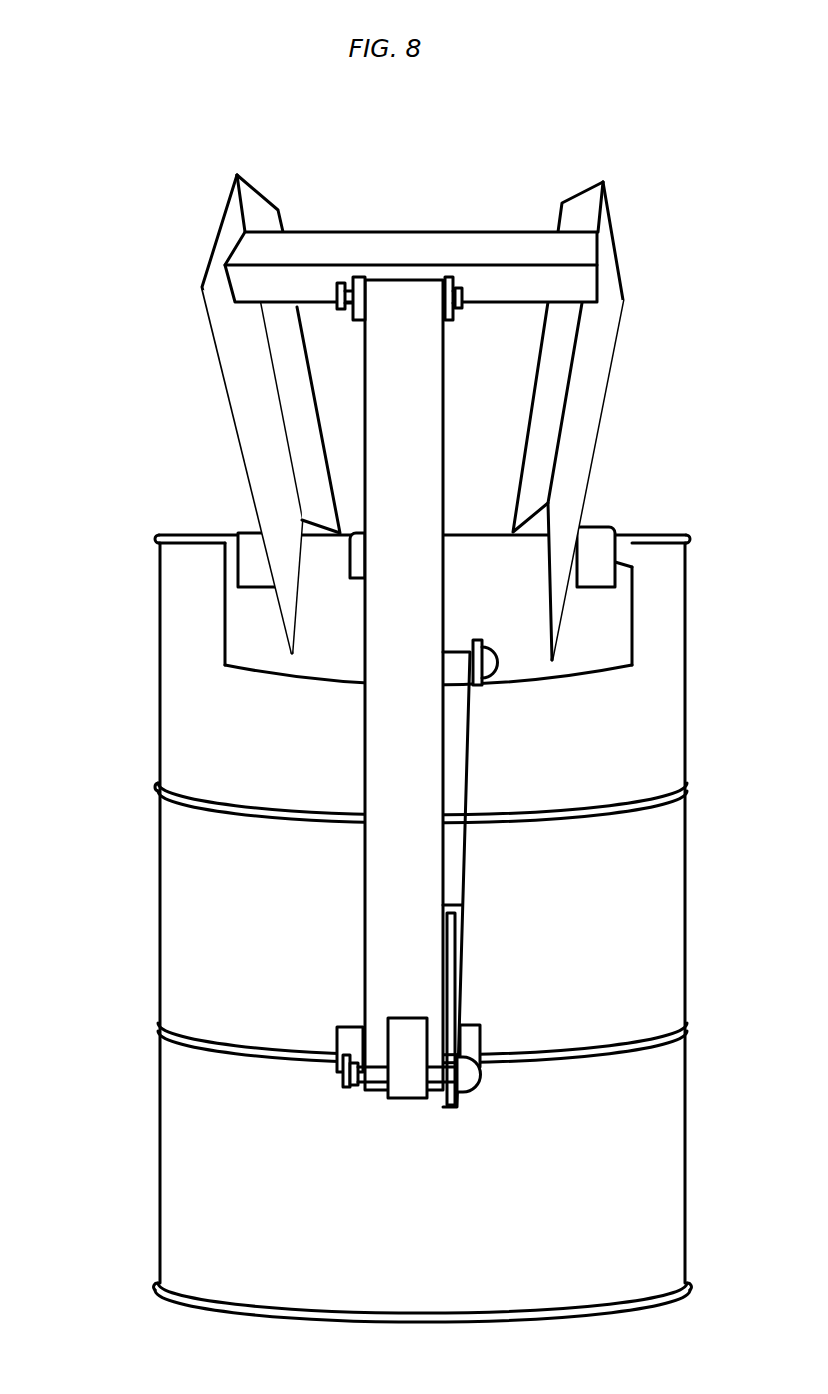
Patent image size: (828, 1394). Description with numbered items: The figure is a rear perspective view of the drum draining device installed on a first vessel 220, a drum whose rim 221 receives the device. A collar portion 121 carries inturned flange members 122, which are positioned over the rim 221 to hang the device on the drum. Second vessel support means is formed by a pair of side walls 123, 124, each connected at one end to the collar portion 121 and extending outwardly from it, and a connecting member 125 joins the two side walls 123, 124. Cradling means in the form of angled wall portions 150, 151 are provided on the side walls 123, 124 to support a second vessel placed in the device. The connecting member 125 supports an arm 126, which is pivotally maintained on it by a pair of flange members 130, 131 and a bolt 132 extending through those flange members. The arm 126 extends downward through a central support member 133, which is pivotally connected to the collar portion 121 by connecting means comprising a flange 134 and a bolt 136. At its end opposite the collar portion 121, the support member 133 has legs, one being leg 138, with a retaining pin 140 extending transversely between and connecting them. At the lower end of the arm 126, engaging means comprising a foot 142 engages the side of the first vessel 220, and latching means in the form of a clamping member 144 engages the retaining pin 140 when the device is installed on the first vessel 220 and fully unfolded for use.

The collar portion 121 is at (573, 649).
The inturned flange members 122 is at (245, 535).
The side wall 123 is at (240, 373).
The side wall 124 is at (583, 378).
The connecting member 125 is at (503, 264).
The arm 126 is at (381, 664).
The flange member 130 is at (358, 278).
The flange member 131 is at (455, 313).
The bolt 132 is at (340, 283).
The central support member 133 is at (455, 830).
The flange 134 is at (478, 640).
The bolt 136 is at (497, 663).
The leg 138 is at (458, 967).
The retaining pin 140 is at (370, 1087).
The foot 142 is at (347, 1032).
The clamping member 144 is at (398, 1095).
The angled wall portion 150 is at (265, 223).
The angled wall portion 151 is at (580, 210).
The first vessel 220 is at (221, 729).
The rim 221 is at (162, 533).